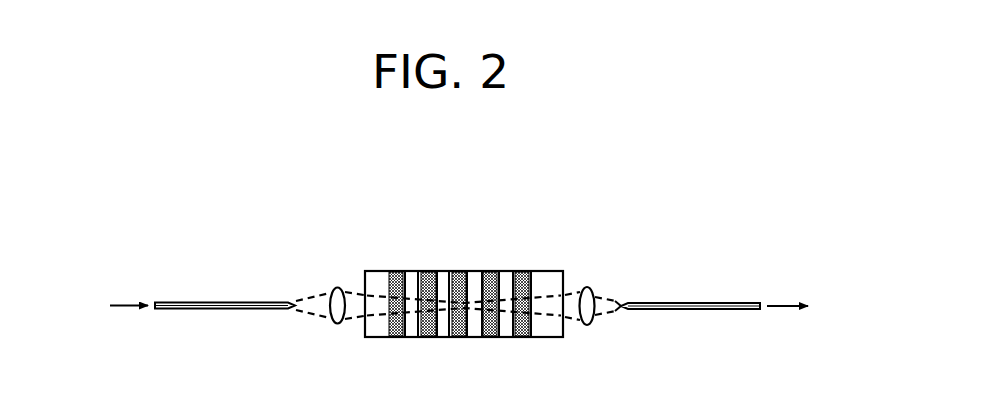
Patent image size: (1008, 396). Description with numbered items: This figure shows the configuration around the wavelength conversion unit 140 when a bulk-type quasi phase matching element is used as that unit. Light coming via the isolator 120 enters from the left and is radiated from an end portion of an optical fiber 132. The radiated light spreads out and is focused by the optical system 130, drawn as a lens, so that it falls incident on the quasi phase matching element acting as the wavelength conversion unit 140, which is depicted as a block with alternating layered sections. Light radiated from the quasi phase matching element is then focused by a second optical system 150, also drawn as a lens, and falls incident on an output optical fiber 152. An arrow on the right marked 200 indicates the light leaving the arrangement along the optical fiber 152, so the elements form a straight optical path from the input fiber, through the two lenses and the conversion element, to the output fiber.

The isolator 120 is at (98, 305).
The optical system 130 is at (338, 287).
The optical fiber 132 is at (207, 302).
The wavelength conversion unit 140 is at (472, 271).
The optical system 150 is at (587, 287).
The optical fiber 152 is at (713, 303).
The output light 200 is at (816, 305).